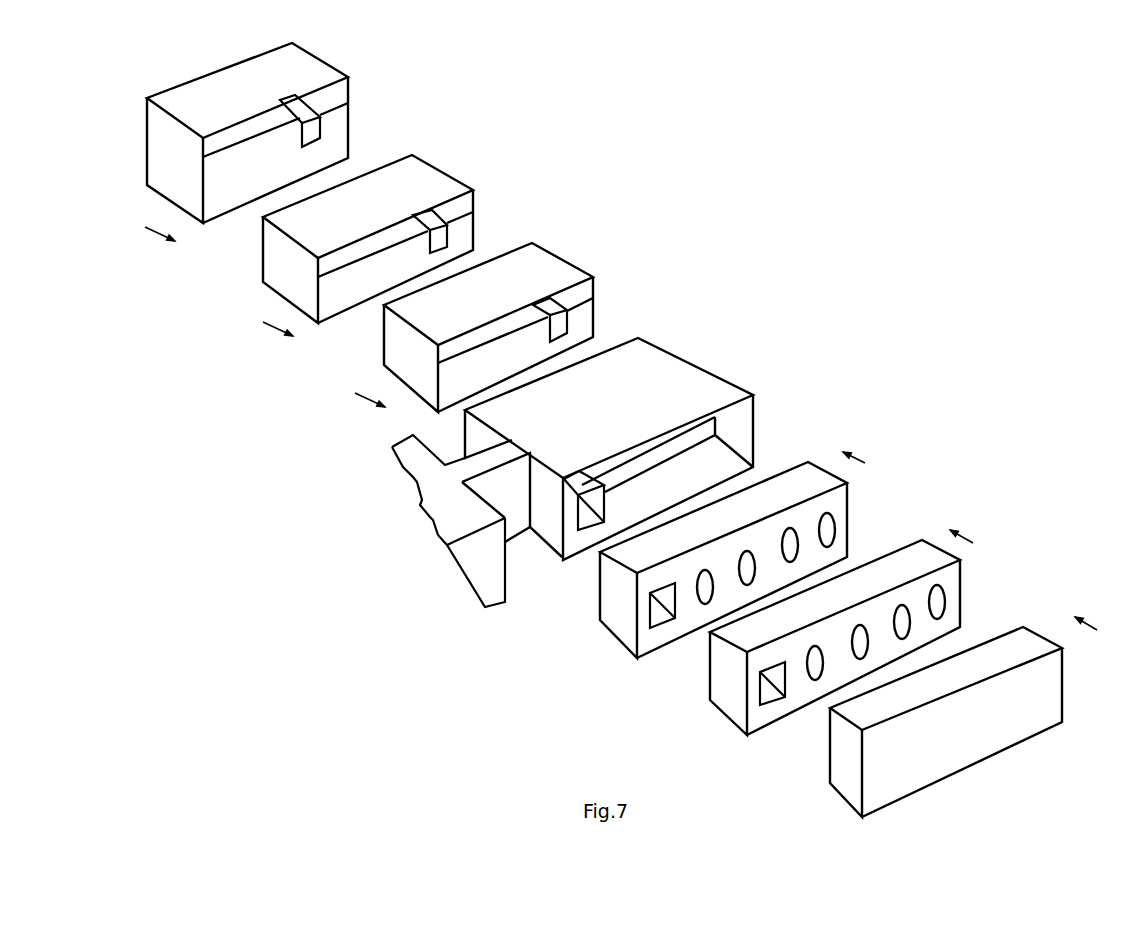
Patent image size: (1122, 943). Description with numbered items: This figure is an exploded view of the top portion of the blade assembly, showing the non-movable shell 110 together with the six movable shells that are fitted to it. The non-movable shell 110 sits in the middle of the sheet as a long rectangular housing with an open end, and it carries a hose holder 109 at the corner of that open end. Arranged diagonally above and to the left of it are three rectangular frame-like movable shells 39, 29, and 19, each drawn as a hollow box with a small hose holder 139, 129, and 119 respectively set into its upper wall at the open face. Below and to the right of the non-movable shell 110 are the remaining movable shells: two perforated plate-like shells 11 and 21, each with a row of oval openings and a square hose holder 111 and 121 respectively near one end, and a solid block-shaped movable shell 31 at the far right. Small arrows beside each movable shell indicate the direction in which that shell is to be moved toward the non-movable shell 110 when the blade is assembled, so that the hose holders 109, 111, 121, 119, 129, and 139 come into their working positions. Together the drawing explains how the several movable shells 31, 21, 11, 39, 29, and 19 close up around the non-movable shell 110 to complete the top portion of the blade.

The movable shell 39 is at (303, 68).
The hose holder 139 is at (303, 112).
The movable shell 29 is at (408, 167).
The hose holder 129 is at (430, 228).
The movable shell 19 is at (528, 265).
The hose holder 119 is at (550, 305).
The non-movable shell 110 is at (672, 375).
The hose holder 109 is at (580, 480).
The movable shell 11 is at (765, 498).
The hose holder 111 is at (670, 597).
The movable shell 21 is at (907, 555).
The hose holder 121 is at (782, 667).
The movable shell 31 is at (998, 653).